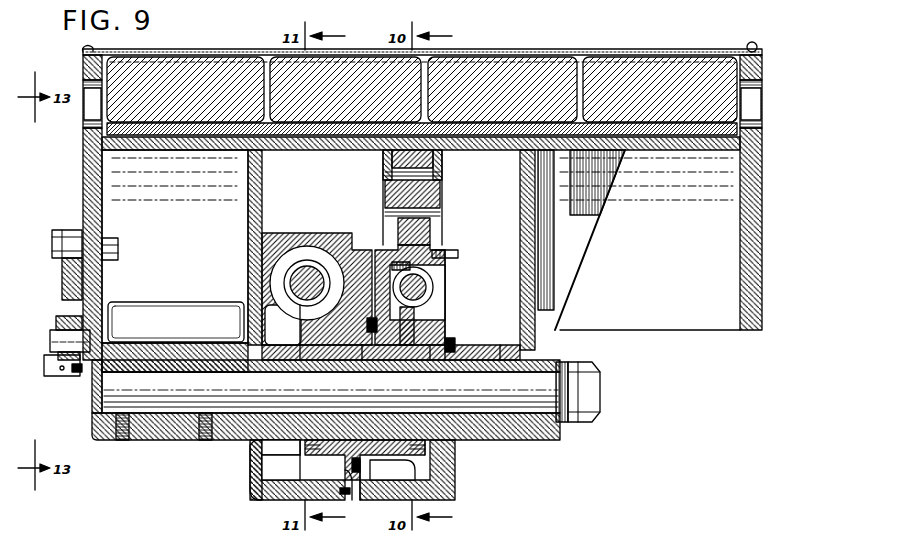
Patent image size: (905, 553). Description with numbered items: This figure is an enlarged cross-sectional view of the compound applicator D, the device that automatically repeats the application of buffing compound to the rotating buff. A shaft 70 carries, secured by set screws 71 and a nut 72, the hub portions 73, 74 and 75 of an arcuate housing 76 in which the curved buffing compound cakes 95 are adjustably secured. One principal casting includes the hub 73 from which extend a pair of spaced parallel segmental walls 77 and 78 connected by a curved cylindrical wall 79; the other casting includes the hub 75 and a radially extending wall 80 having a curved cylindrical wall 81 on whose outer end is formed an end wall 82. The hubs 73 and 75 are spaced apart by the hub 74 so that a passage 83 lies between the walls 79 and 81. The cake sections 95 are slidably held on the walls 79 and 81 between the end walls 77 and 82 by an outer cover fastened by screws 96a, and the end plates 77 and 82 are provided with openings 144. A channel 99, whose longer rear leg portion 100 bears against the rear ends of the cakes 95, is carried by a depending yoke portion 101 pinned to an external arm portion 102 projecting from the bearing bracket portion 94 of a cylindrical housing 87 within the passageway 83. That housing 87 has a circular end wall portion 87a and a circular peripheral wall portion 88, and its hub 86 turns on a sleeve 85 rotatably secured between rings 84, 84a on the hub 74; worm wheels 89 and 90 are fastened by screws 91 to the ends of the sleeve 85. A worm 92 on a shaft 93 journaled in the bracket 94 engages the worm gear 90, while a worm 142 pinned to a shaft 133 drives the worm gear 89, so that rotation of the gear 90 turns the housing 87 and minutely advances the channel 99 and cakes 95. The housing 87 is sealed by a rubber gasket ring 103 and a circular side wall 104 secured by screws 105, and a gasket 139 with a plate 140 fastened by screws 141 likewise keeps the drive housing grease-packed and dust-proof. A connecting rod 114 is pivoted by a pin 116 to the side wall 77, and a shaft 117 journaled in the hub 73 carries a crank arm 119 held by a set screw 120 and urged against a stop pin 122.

The shaft 70 is at (250, 391).
The set screws 71 is at (122, 440).
The nut 72 is at (576, 392).
The hub 73 is at (164, 364).
The hub 74 is at (348, 366).
The hub 75 is at (496, 366).
The arcuate housing 76 is at (622, 49).
The segmental wall 77 is at (83, 188).
The segmental wall 78 is at (248, 200).
The curved cylindrical wall 79 is at (166, 150).
The radially extending wall 80 is at (520, 216).
The curved cylindrical wall 81 is at (562, 150).
The end wall 82 is at (760, 222).
The space or passage 83 is at (383, 192).
The ring 84 is at (304, 366).
The ring 84a is at (426, 366).
The sleeve 85 is at (344, 366).
The hub 86 is at (365, 460).
The cylindrical housing 87 is at (376, 246).
The circular end wall portion 87a is at (392, 492).
The circular peripheral wall portion 88 is at (430, 500).
The worm wheel 89 is at (300, 340).
The worm wheel 90 is at (420, 322).
The screws 91 is at (300, 440).
The worm 92 is at (433, 288).
The shaft 93 is at (430, 300).
The bearing bracket portion 94 is at (410, 262).
The buffing compound cakes 95 is at (208, 68).
The screws 96a is at (84, 47).
The channel 99 is at (618, 142).
The rear leg portion 100 is at (533, 60).
The depending yoke portion 101 is at (410, 196).
The external arm portion 102 is at (428, 218).
The rubber gasket ring 103 is at (462, 352).
The circular side wall 104 is at (455, 342).
The screws 105 is at (458, 254).
The connecting rod 114 is at (62, 272).
The pin 116 is at (52, 244).
The shaft 117 is at (50, 332).
The crank arm 119 is at (44, 364).
The set screw 120 is at (68, 316).
The stop pin 122 is at (76, 372).
The shaft 133 is at (320, 276).
The gasket 139 is at (366, 325).
The plate 140 is at (355, 472).
The screws 141 is at (345, 494).
The worm 142 is at (286, 278).
The openings 144 is at (94, 114).
The compound applicator D is at (700, 48).